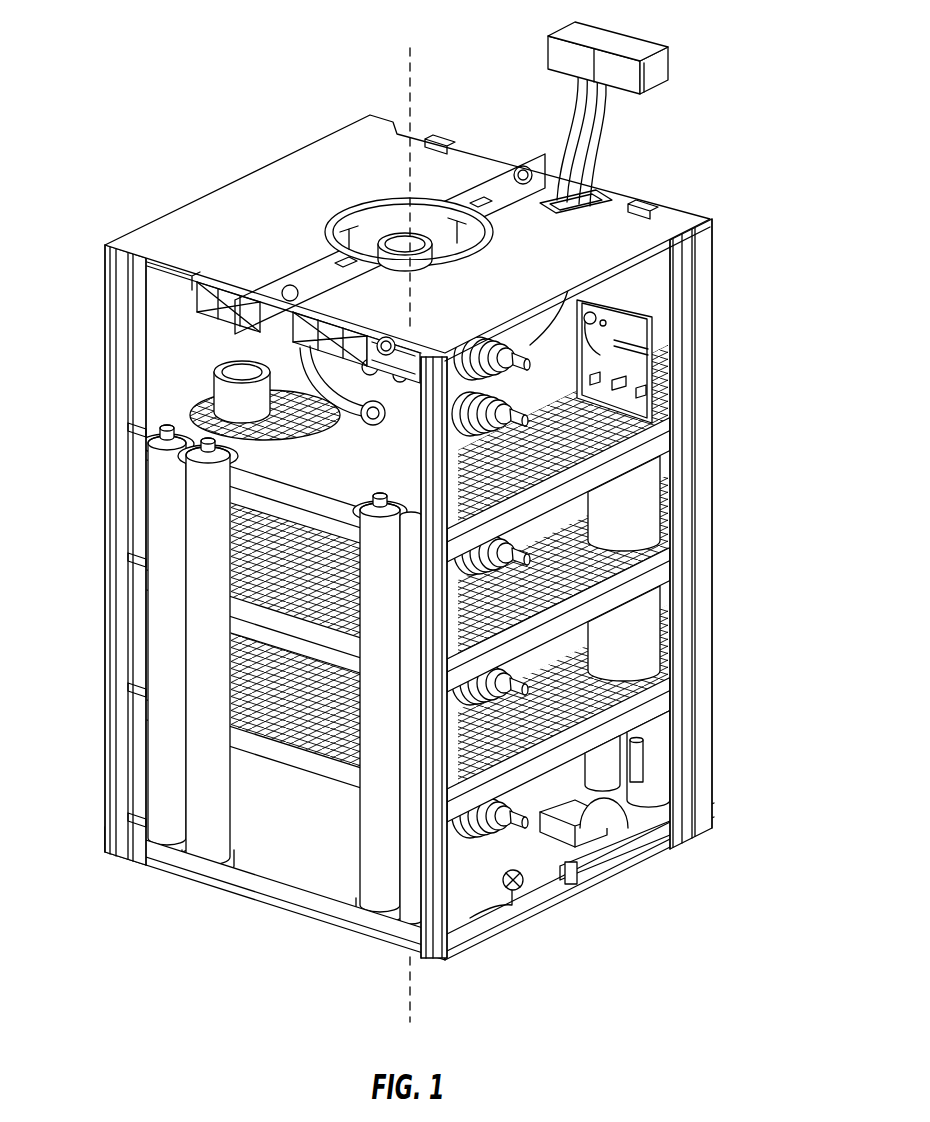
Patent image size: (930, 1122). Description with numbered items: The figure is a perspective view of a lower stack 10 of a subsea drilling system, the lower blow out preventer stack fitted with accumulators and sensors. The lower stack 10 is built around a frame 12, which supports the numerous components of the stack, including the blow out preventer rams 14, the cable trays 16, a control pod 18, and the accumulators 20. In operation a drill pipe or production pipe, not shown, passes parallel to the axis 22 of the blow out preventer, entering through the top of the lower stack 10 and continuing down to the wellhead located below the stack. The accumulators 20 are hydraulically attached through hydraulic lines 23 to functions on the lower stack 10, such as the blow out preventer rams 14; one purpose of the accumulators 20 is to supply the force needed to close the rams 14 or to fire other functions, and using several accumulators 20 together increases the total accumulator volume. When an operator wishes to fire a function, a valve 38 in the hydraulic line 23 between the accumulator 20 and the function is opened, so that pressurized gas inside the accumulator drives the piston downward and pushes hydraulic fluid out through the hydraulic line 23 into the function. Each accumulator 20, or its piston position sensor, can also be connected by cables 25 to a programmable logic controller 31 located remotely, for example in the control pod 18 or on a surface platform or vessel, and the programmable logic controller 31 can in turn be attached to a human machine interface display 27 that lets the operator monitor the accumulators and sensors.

The lower stack 10 is at (411, 520).
The frame 12 is at (702, 470).
The blow out preventer (BOP) rams 14 is at (532, 425).
The cable trays 16 is at (440, 937).
The control pod 18 is at (660, 833).
The accumulators 20 is at (628, 512).
The axis 22 is at (410, 68).
The hydraulic lines 23 is at (488, 914).
The cables 25 is at (194, 406).
The human machine interface (HMI) display 27 is at (655, 68).
The programmable logic controller (PLC) 31 is at (548, 48).
The valve 38 is at (524, 884).